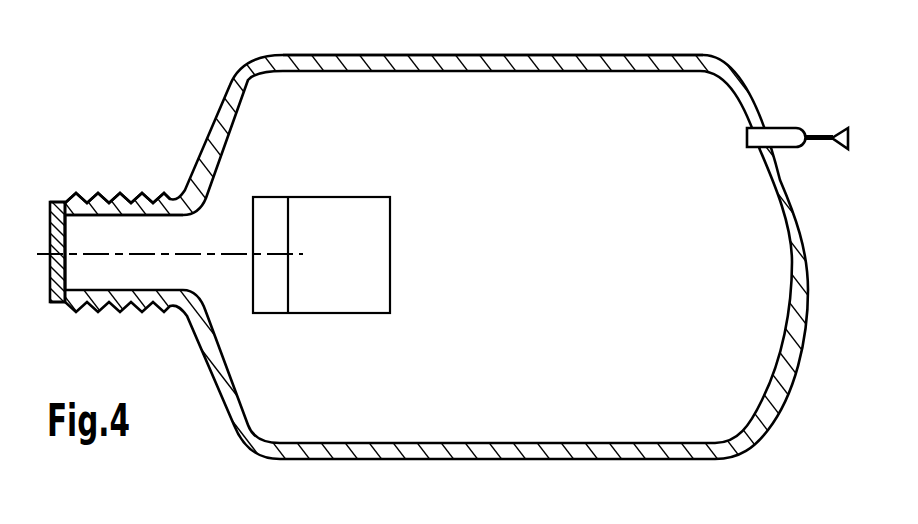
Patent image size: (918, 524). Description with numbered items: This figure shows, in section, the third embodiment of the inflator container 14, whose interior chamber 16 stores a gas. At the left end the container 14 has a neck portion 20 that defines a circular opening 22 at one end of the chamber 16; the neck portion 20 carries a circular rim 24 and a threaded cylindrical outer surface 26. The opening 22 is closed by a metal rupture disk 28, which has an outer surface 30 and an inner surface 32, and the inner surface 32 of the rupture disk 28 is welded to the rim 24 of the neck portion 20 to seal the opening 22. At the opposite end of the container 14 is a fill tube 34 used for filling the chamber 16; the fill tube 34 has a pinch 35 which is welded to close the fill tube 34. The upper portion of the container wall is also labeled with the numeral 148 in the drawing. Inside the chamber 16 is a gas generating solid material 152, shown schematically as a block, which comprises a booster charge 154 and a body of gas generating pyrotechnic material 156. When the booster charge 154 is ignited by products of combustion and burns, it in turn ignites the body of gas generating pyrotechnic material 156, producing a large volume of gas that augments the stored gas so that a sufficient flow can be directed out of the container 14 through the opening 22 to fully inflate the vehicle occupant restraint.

The container 14 is at (282, 53).
The chamber 16 is at (510, 115).
The vessel body portion 148 is at (493, 27).
The neck portion 20 is at (113, 207).
The circular opening 22 is at (88, 238).
The circular rim 24 is at (60, 203).
The threaded cylindrical outer surface 26 is at (150, 192).
The rupture disk 28 is at (50, 236).
The outer surface 30 is at (50, 290).
The inner surface 32 is at (66, 262).
The fill tube 34 is at (787, 128).
The pinch 35 is at (829, 121).
The gas generating solid material 152 is at (316, 320).
The booster charge 154 is at (270, 283).
The body of gas generating pyrotechnic material 156 is at (380, 284).